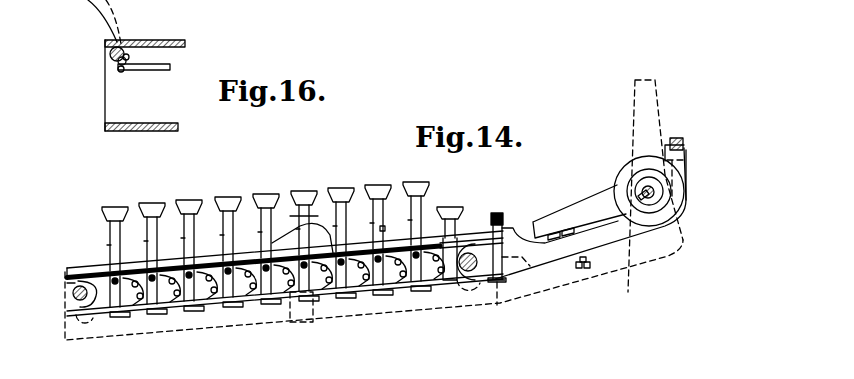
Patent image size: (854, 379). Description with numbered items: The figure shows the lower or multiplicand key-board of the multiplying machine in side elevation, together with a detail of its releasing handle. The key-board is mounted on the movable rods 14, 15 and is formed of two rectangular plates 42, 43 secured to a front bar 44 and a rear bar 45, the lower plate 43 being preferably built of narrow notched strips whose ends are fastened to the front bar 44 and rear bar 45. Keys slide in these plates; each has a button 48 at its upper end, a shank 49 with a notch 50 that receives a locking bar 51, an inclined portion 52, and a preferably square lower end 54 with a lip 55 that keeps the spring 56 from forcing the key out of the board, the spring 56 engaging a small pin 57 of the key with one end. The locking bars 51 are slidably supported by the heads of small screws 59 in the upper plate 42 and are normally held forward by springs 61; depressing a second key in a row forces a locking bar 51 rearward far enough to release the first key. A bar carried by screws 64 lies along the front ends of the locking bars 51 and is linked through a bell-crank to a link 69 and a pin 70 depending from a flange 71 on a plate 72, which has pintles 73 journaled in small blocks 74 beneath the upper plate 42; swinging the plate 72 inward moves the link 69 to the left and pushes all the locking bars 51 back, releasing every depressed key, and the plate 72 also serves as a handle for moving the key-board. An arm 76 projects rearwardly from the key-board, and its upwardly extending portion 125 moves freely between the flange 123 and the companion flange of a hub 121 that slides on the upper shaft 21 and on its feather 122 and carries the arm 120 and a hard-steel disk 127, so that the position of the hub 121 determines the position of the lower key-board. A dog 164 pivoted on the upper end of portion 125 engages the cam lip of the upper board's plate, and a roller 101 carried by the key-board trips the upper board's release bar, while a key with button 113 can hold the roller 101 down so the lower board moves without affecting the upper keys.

In FIG. 14, the movable rod 14 is at (76, 297).
In FIG. 14, the movable rod 15 is at (470, 273).
In FIG. 14, the upper shaft 21 is at (650, 190).
In FIG. 14, the rectangular plate 42 is at (459, 241).
In FIG. 14, the rectangular plate 43 is at (437, 290).
In FIG. 14, the front bar 44 is at (76, 307).
In FIG. 14, the rear bar 45 is at (503, 279).
In FIG. 14, the button 48 is at (348, 186).
In FIG. 14, the shank 49 is at (418, 210).
In FIG. 14, the notch 50 is at (385, 229).
In FIG. 14, the locking bar 51 is at (258, 303).
In FIG. 14, the inclined portion 52 is at (337, 244).
In FIG. 14, the lower end 54 is at (340, 284).
In FIG. 14, the lip 55 is at (346, 287).
In FIG. 14, the spring 56 is at (207, 303).
In FIG. 14, the small pin 57 is at (148, 311).
In FIG. 14, the small screw 59 is at (137, 318).
In FIG. 14, the spring 61 is at (276, 249).
In FIG. 14, the screw 64 is at (73, 283).
In FIG. 16, the link 69 is at (160, 70).
In FIG. 16, the pin 70 is at (121, 72).
In FIG. 16, the flange 71 is at (128, 60).
In FIG. 16, the plate 72 is at (104, 19).
In FIG. 14, the plate 72 is at (286, 246).
In FIG. 16, the pintle 73 is at (111, 60).
In FIG. 16, the small block 74 is at (106, 52).
In FIG. 14, the arm 76 is at (570, 258).
In FIG. 14, the roller 101 is at (500, 216).
In FIG. 14, the button 113 is at (446, 213).
In FIG. 14, the arm 120 is at (579, 212).
In FIG. 14, the hub 121 is at (668, 210).
In FIG. 14, the feather 122 is at (645, 202).
In FIG. 14, the flange 123 is at (658, 218).
In FIG. 14, the upwardly extending portion 125 is at (682, 187).
In FIG. 14, the disk 127 is at (614, 188).
In FIG. 14, the dog 164 is at (680, 143).